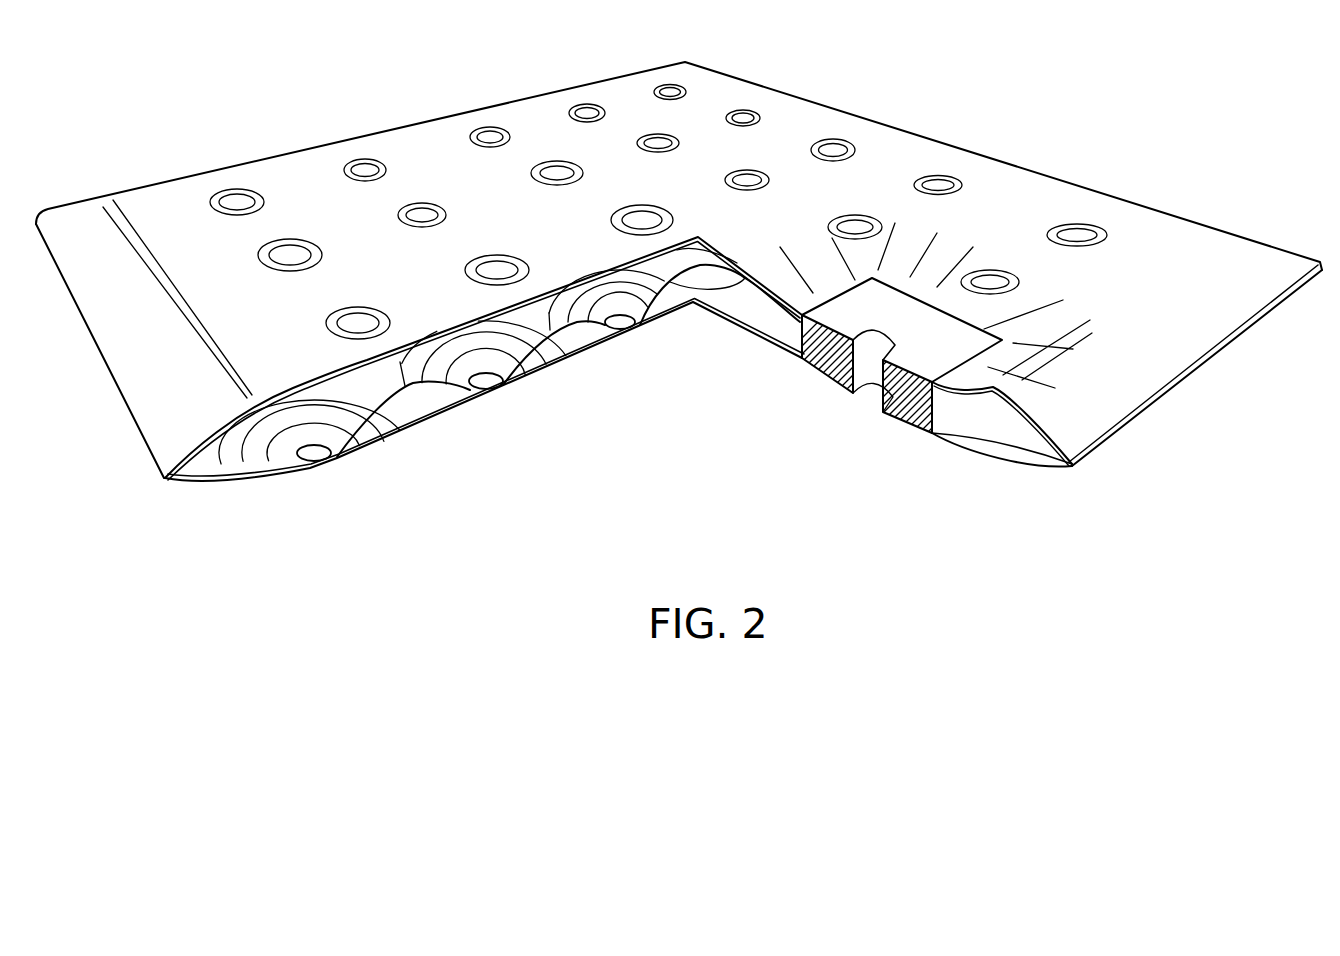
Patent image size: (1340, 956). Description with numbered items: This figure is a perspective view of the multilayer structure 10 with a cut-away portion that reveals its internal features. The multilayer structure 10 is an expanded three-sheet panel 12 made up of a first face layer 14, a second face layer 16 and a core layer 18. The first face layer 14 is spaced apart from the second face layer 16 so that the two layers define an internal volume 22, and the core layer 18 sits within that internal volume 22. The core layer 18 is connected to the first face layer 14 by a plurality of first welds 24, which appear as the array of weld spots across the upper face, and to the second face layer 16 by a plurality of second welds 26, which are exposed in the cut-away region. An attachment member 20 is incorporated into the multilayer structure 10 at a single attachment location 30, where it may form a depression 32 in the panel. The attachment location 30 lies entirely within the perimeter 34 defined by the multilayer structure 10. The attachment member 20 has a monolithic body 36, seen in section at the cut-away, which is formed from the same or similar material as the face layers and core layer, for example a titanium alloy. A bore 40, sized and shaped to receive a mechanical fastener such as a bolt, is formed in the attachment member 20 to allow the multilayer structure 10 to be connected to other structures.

The multilayer structure 10 is at (1000, 92).
The expanded three-sheet panel 12 is at (1028, 155).
The first face layer 14 is at (427, 336).
The second face layer 16 is at (440, 410).
The core layer 18 is at (585, 344).
The attachment member 20 is at (965, 352).
The internal volume 22 is at (413, 405).
The first welds 24 is at (766, 178).
The second welds 26 is at (315, 453).
The attachment location 30 is at (933, 265).
The depression 32 is at (977, 312).
The perimeter 34 is at (1100, 447).
The monolithic body 36 is at (823, 360).
The bore 40 is at (870, 387).